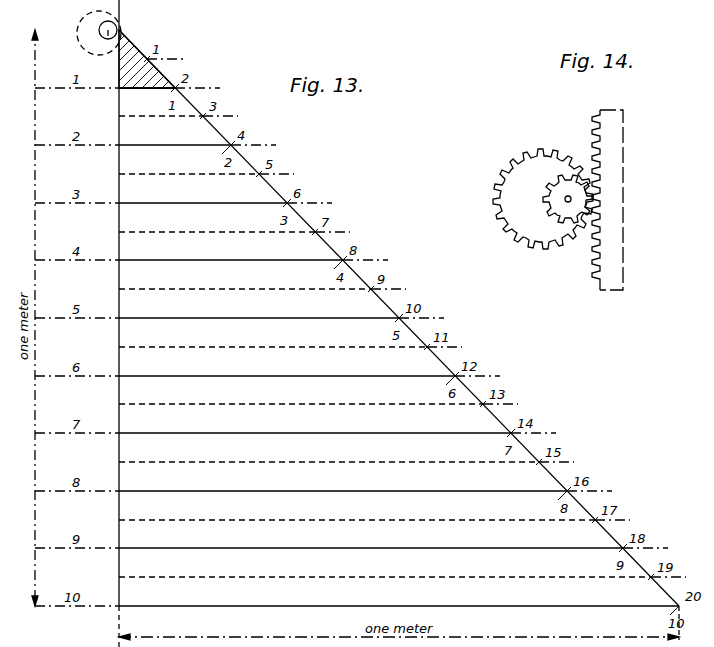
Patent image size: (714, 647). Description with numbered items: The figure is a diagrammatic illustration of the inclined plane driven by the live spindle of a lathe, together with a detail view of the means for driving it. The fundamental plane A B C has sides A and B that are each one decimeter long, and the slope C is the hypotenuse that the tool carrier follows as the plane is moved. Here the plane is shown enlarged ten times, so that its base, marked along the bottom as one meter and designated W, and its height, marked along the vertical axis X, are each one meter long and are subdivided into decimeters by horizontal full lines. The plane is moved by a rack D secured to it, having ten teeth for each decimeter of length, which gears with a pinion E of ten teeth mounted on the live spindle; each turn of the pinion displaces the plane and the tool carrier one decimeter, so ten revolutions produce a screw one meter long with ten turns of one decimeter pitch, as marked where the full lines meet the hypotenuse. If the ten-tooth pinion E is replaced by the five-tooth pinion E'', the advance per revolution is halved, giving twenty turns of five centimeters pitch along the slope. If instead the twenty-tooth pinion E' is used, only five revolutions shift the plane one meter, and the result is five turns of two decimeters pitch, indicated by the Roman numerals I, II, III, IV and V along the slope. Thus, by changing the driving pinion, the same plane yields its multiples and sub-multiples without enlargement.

In FIG. 13, the twenty-tooth pinion E' is at (81, 31).
In FIG. 14, the twenty-tooth pinion E' is at (527, 199).
In FIG. 13, the five-tooth pinion E'' is at (120, 24).
In FIG. 14, the five-tooth pinion E'' is at (557, 202).
In FIG. 13, the pinion E is at (86, 47).
In FIG. 14, the pinion E is at (544, 193).
In FIG. 14, the rack D is at (598, 197).
In FIG. 13, the side of the fundamental plane A is at (133, 59).
In FIG. 13, the side of the fundamental plane B is at (147, 99).
In FIG. 13, the slope of the inclined plane C is at (144, 62).
In FIG. 13, the vertical axis X is at (110, 15).
In FIG. 13, the horizontal base dimension W is at (389, 623).
In FIG. 13, the first division point I is at (222, 154).
In FIG. 13, the second division point II is at (334, 269).
In FIG. 13, the third division point III is at (446, 385).
In FIG. 13, the fourth division point IV is at (558, 500).
In FIG. 13, the fifth division point V is at (670, 615).